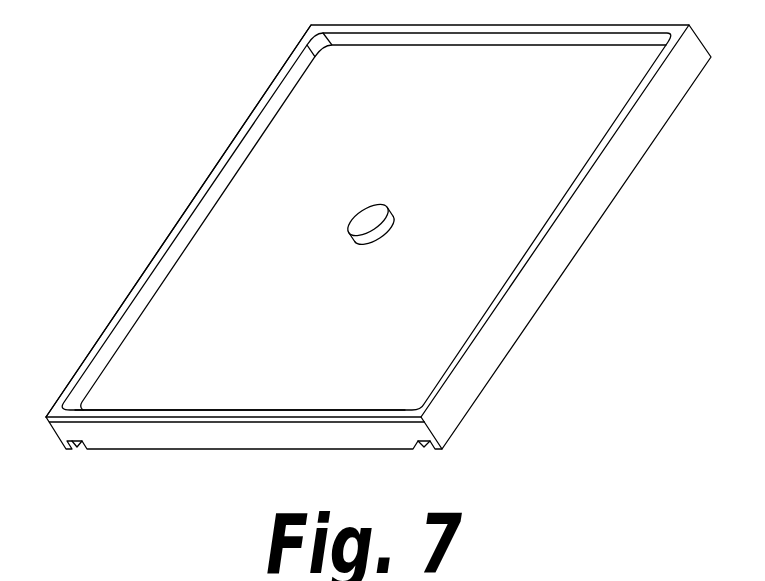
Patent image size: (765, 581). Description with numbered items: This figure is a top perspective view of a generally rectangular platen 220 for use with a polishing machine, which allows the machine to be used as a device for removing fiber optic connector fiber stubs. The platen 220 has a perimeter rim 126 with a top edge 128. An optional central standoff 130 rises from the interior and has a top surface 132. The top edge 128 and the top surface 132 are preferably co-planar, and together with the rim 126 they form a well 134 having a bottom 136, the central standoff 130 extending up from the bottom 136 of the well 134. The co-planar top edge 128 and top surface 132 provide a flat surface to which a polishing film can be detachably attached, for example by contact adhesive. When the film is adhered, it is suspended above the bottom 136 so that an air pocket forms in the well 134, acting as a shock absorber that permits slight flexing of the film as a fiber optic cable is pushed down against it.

The platen 220 is at (554, 359).
The perimeter rim 126 is at (137, 310).
The top edge 128 is at (170, 233).
The central standoff 130 is at (376, 253).
The top surface 132 is at (357, 227).
The well 134 is at (298, 160).
The bottom 136 is at (227, 392).